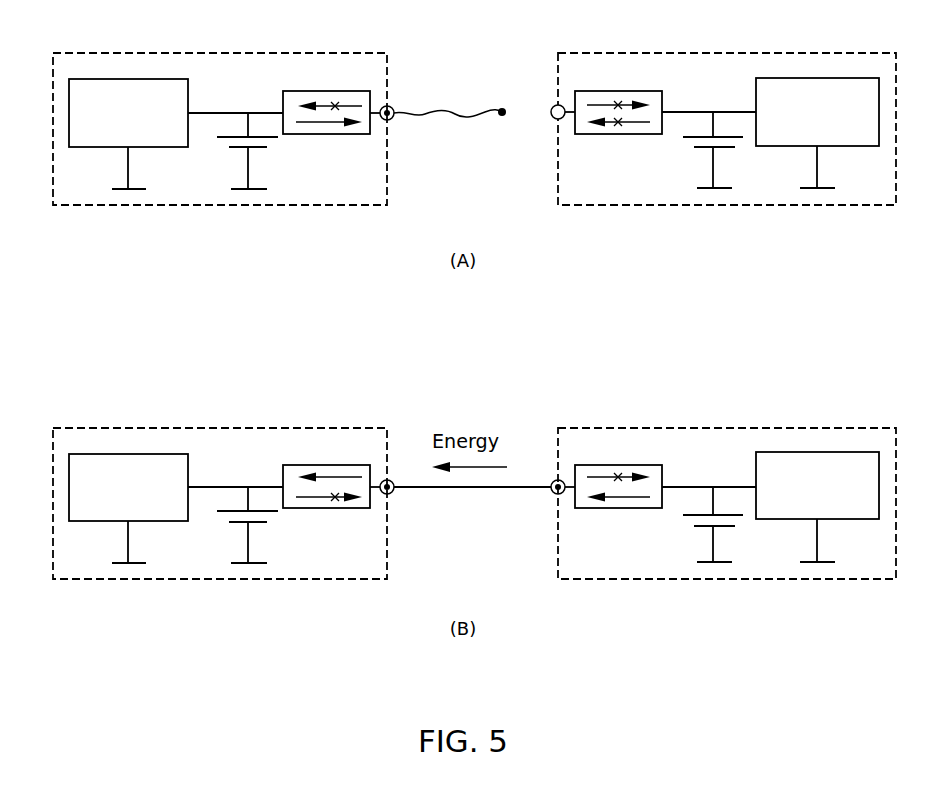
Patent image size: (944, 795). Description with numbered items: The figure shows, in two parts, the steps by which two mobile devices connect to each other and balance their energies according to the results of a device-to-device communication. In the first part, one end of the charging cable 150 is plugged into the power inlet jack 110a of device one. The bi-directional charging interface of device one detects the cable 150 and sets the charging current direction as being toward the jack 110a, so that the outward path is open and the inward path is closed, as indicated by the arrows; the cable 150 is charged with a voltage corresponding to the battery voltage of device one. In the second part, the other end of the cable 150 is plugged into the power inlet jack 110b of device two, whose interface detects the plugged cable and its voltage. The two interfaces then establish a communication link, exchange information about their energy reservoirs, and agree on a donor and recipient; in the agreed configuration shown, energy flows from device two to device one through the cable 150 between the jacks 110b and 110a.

The power inlet jack 110a is at (390, 106).
The power inlet jack 110b is at (552, 494).
The charging cable 150 is at (448, 118).